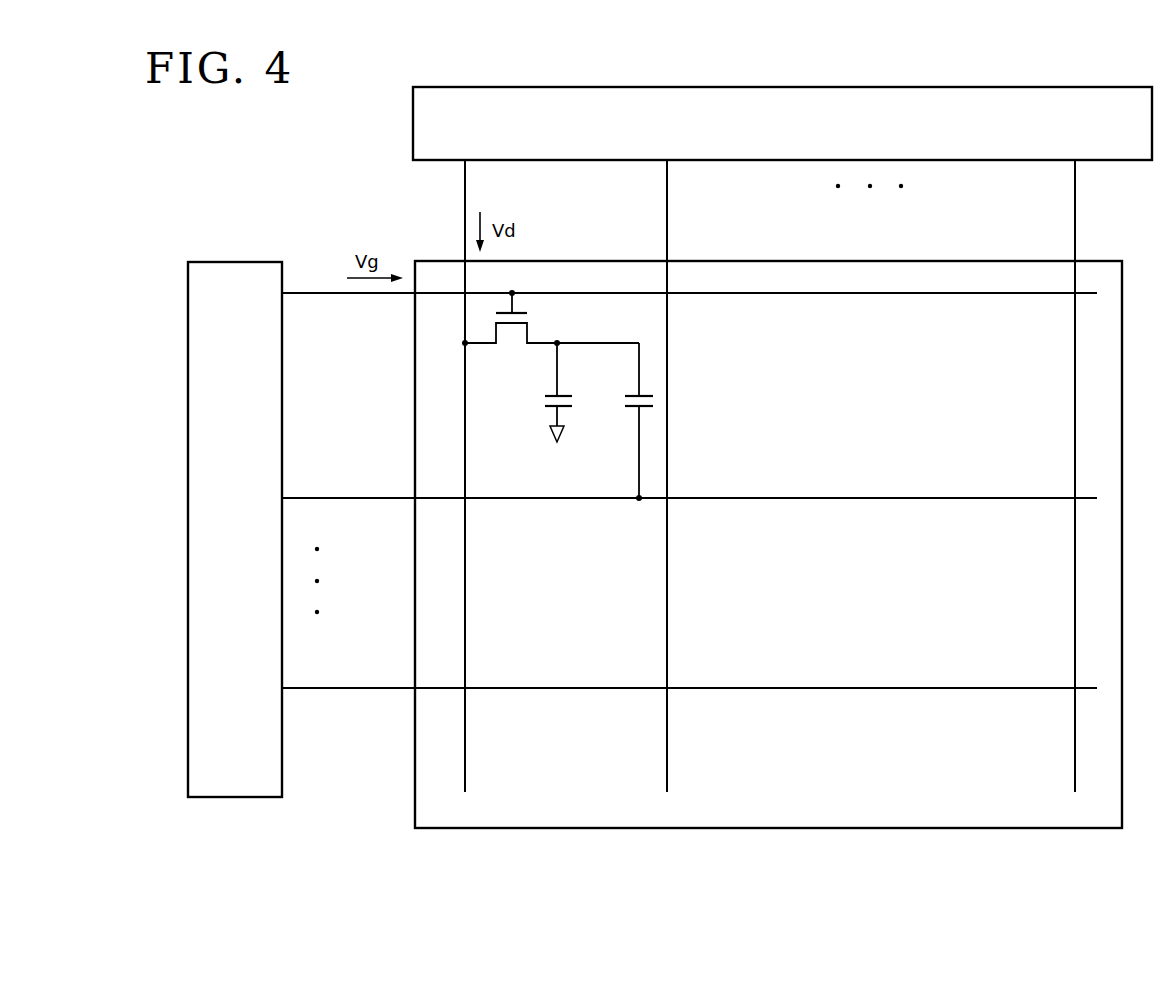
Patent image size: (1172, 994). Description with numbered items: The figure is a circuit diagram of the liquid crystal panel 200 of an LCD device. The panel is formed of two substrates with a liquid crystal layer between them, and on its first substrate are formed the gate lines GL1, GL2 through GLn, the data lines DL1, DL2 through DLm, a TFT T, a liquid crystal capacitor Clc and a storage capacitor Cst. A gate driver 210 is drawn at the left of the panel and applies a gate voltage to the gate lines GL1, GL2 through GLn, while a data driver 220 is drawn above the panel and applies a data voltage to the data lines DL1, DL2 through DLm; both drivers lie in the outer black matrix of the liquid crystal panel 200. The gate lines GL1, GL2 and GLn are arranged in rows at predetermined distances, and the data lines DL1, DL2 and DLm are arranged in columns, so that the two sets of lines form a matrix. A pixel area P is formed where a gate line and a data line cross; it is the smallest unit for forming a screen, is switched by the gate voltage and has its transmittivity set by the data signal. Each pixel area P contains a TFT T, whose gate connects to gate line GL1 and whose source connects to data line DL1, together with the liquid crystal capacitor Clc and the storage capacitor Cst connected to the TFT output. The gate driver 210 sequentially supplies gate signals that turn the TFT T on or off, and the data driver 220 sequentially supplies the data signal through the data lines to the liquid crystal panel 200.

The liquid crystal panel 200 is at (938, 260).
The gate driver 210 is at (250, 262).
The data driver 220 is at (788, 86).
The pixel area P is at (557, 385).
The TFT T is at (550, 327).
The liquid crystal capacitor Clc is at (540, 392).
The storage capacitor Cst is at (621, 422).
The first gate line GL1 is at (689, 280).
The second gate line GL2 is at (689, 485).
The n-th gate line GLn is at (689, 674).
The first data line DL1 is at (488, 476).
The second data line DL2 is at (689, 476).
The m-th data line DLm is at (1100, 476).